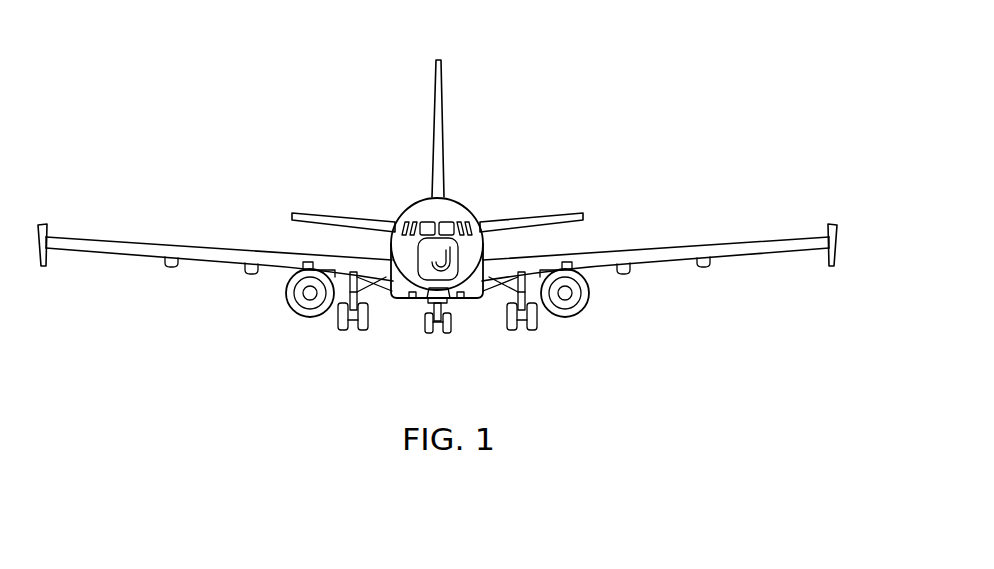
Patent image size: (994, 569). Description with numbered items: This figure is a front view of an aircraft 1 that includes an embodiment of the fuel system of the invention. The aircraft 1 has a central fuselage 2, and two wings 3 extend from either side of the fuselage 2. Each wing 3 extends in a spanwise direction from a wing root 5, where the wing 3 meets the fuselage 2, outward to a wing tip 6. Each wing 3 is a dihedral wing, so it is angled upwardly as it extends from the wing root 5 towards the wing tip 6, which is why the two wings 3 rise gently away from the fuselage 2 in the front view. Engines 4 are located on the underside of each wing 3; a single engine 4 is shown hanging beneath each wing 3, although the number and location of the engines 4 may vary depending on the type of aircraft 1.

The aircraft 1 is at (437, 197).
The fuselage 2 is at (398, 194).
The wing 3 is at (96, 253).
The engine 4 is at (302, 316).
The wing root 5 is at (487, 284).
The wing tip 6 is at (827, 250).